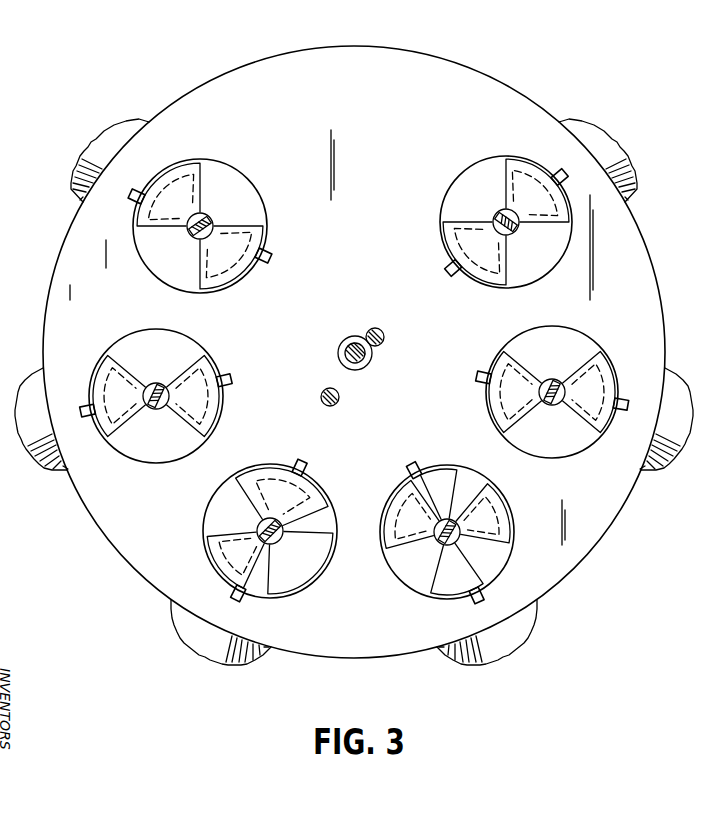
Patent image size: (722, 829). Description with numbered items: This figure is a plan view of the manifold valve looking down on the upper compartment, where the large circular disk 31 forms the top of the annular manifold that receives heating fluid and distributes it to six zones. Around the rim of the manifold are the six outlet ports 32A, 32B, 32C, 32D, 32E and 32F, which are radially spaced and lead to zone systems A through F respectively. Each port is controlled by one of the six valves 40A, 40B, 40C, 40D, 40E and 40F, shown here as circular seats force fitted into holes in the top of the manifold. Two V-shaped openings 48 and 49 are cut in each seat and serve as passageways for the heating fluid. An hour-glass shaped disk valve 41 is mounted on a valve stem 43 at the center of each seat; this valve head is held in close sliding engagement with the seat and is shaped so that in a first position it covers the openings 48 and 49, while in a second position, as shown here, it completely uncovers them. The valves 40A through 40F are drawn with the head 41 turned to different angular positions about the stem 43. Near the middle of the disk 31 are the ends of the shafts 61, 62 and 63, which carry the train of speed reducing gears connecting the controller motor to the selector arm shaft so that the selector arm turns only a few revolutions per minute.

The turret disk 31 is at (359, 109).
The outlet port 32A is at (98, 152).
The outlet port 32B is at (26, 444).
The outlet port 32C is at (208, 662).
The outlet port 32D is at (490, 666).
The outlet port 32E is at (684, 437).
The outlet port 32F is at (629, 151).
The valve 40A is at (244, 190).
The valve 40B is at (156, 340).
The valve 40C is at (232, 600).
The valve 40D is at (418, 590).
The valve 40E is at (590, 348).
The valve 40F is at (498, 172).
The hour-glass shaped disk valve 41 is at (184, 172).
The valve stem 43 is at (193, 236).
The V-shaped opening 48 is at (192, 195).
The V-shaped opening 49 is at (232, 228).
The shaft 61 is at (368, 364).
The shaft 62 is at (340, 396).
The shaft 63 is at (380, 332).